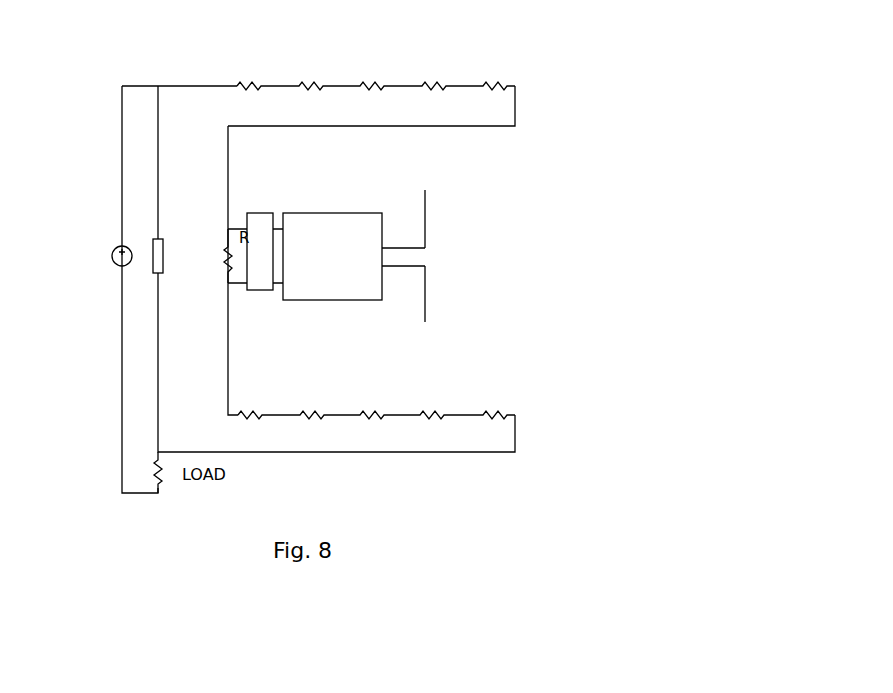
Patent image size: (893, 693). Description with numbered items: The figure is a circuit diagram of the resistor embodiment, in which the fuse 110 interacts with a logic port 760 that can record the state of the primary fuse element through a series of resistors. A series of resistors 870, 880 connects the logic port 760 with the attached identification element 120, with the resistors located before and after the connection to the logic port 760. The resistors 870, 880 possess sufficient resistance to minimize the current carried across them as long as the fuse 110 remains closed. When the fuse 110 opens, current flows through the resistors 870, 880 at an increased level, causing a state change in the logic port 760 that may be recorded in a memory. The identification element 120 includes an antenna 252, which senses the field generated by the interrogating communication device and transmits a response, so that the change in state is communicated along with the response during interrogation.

The fuse 110 is at (158, 212).
The logic port 760 is at (260, 213).
The identification element 120 is at (338, 300).
The antenna 252 is at (427, 260).
The resistors 870 is at (500, 85).
The resistors 880 is at (502, 403).